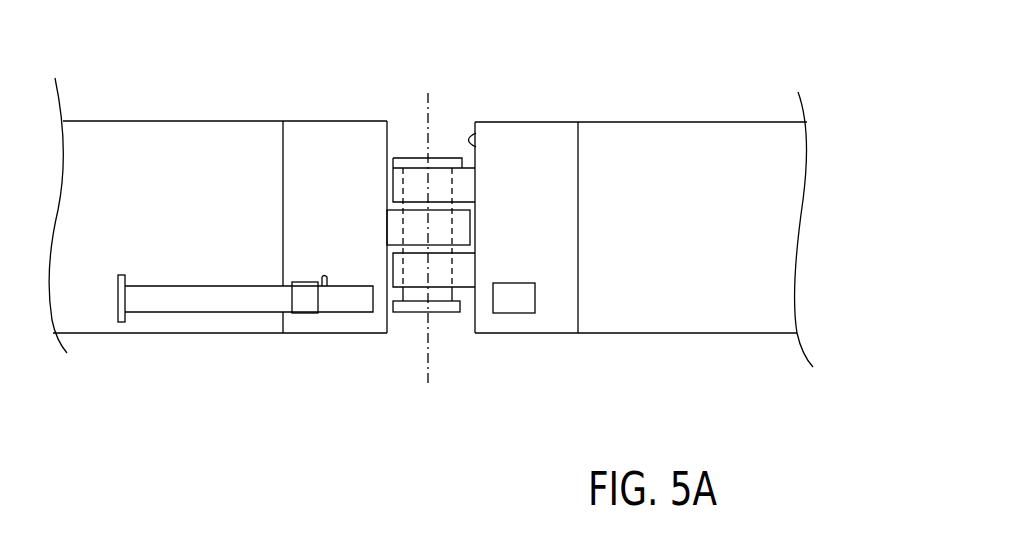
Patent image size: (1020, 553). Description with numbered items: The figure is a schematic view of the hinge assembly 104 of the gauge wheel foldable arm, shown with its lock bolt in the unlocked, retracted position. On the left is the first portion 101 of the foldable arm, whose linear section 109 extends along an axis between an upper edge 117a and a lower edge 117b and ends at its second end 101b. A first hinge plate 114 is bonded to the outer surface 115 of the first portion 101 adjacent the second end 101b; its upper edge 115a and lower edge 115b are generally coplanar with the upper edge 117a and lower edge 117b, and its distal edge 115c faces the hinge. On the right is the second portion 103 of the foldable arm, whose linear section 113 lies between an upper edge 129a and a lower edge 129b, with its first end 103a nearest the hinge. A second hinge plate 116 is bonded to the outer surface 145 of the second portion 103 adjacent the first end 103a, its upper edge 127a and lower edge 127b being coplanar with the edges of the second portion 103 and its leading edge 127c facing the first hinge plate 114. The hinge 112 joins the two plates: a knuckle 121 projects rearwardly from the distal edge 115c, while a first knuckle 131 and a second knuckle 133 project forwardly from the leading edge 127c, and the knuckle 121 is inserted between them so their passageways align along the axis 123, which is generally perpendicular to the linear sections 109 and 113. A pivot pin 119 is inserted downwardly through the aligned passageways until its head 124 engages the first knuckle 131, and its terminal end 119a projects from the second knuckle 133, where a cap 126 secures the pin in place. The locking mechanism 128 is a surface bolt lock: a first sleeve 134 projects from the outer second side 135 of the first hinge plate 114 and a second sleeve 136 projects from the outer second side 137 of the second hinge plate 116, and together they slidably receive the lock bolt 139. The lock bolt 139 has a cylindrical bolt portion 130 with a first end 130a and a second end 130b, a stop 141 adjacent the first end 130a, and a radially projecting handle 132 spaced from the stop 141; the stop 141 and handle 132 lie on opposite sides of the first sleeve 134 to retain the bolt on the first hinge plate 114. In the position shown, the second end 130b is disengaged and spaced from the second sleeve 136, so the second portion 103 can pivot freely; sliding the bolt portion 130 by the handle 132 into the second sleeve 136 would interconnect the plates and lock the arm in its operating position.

The first portion of the foldable arm 101 is at (94, 336).
The second end of the first portion 101b is at (353, 337).
The second portion of the foldable arm 103 is at (757, 336).
The first end of the second portion 103a is at (536, 120).
The hinge assembly 104 is at (469, 380).
The linear section 109 is at (106, 137).
The hinge 112 is at (500, 122).
The linear section 113 is at (738, 139).
The first hinge plate 114 is at (283, 120).
The outer surface 115 is at (78, 202).
The upper edge 115a is at (337, 121).
The lower edge 115b is at (296, 334).
The distal edge 115c is at (388, 138).
The second hinge plate 116 is at (541, 335).
The upper edge 117a is at (168, 122).
The lower edge 117b is at (110, 335).
The pivot pin 119 is at (444, 156).
The terminal end 119a is at (385, 305).
The knuckle 121 is at (472, 229).
The axis 123 is at (428, 360).
The head 124 is at (462, 169).
The cap 126 is at (450, 325).
The upper edge 127a is at (578, 121).
The lower edge 127b is at (565, 334).
The leading edge 127c is at (478, 147).
The locking mechanism 128 is at (222, 284).
The upper edge 129a is at (685, 121).
The lower edge 129b is at (702, 334).
The bolt portion 130 is at (219, 313).
The first end 130a is at (134, 318).
The second end 130b is at (336, 314).
The first knuckle 131 is at (385, 186).
The handle 132 is at (322, 276).
The second knuckle 133 is at (385, 268).
The first sleeve 134 is at (288, 320).
The second side 135 is at (291, 182).
The second sleeve 136 is at (537, 298).
The second side 137 is at (508, 274).
The lock bolt 139 is at (167, 284).
The stop 141 is at (118, 296).
The outer surface 145 is at (700, 219).